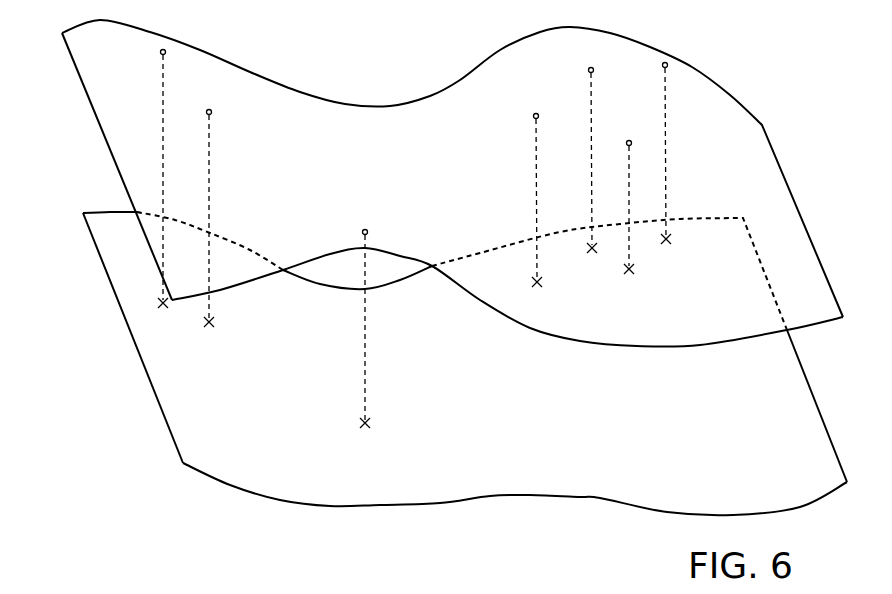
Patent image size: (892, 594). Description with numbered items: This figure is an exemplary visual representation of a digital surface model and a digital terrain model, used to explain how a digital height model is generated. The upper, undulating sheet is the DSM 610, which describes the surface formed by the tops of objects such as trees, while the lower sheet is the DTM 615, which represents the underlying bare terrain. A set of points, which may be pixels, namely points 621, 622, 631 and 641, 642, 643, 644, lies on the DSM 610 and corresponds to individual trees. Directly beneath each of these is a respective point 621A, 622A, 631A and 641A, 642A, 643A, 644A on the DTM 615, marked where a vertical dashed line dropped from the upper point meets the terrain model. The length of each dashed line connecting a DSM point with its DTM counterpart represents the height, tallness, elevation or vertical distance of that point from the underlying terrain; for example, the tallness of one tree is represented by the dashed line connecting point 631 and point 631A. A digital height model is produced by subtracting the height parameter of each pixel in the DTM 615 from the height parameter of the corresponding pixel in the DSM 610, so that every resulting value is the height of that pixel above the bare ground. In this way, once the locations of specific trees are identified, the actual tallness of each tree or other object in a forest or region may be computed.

The digital surface model (DSM) 610 is at (772, 148).
The digital terrain model (DTM) 615 is at (168, 426).
The point on DSM 621 is at (160, 52).
The point on DSM 622 is at (212, 112).
The point on DSM 631 is at (362, 232).
The point on DSM 641 is at (533, 116).
The point on DSM 642 is at (629, 140).
The point on DSM 643 is at (662, 65).
The point on DSM 644 is at (588, 70).
The point on DTM 621A is at (163, 310).
The point on DTM 622A is at (216, 323).
The point on DTM 631A is at (372, 425).
The point on DTM 641A is at (532, 282).
The point on DTM 642A is at (629, 276).
The point on DTM 643A is at (666, 246).
The point on DTM 644A is at (592, 254).